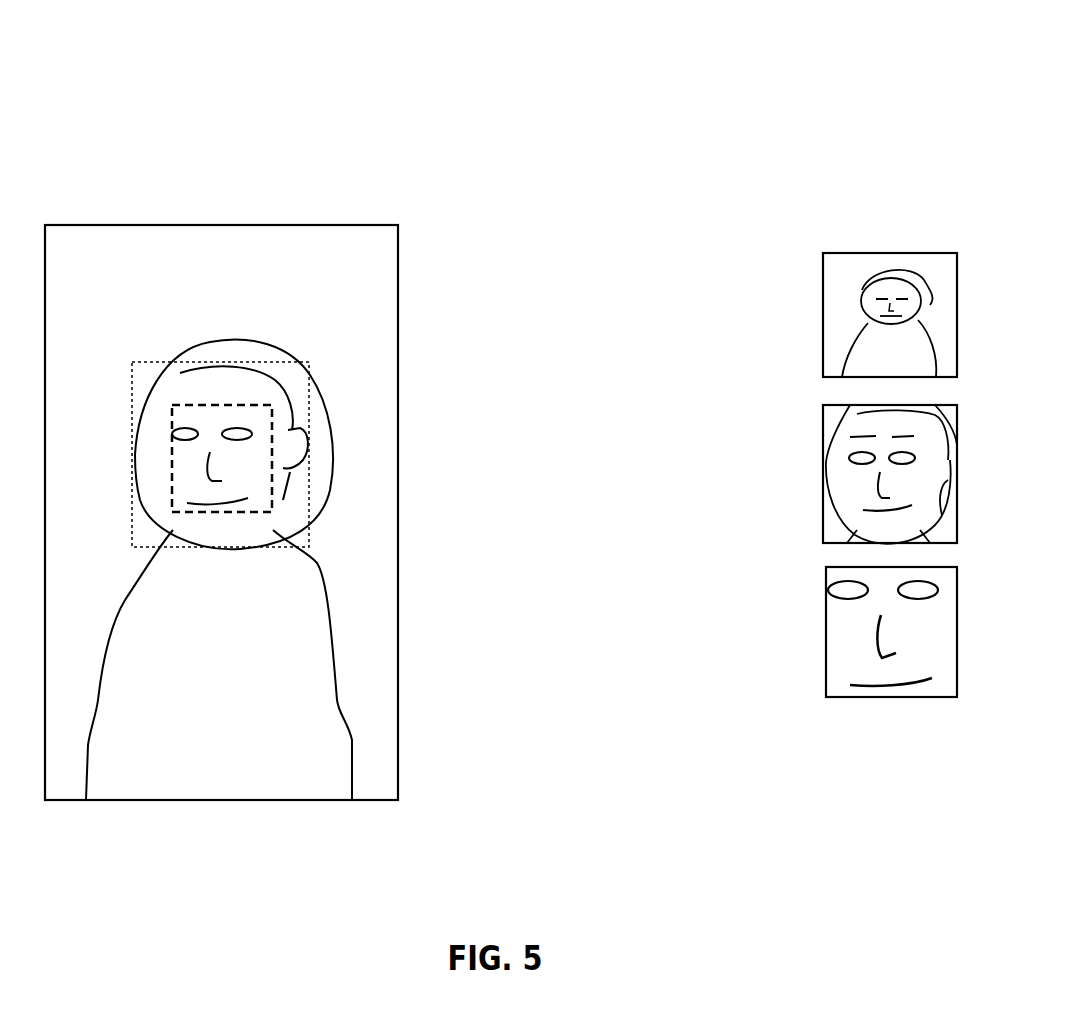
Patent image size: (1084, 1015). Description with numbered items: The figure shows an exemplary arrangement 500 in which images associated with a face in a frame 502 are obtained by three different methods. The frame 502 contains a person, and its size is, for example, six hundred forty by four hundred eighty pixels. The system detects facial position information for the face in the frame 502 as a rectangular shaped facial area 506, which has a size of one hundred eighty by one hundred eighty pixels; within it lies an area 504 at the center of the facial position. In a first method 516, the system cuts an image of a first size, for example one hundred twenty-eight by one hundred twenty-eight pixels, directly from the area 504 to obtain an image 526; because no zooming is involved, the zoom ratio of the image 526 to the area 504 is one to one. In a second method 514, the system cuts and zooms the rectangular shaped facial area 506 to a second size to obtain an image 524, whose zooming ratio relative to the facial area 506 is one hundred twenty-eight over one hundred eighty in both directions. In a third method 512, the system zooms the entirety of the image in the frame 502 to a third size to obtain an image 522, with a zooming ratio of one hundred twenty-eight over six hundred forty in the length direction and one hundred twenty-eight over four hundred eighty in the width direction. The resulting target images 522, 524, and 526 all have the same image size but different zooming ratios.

The frame processing diagram 500 is at (870, 40).
The frame 502 is at (320, 225).
The area 504 is at (173, 458).
The rectangular shaped facial area 506 is at (297, 362).
The third method 512 is at (398, 225).
The second method 514 is at (309, 362).
The first method 516 is at (272, 512).
The image 522 is at (823, 318).
The image 524 is at (823, 474).
The image 526 is at (826, 636).